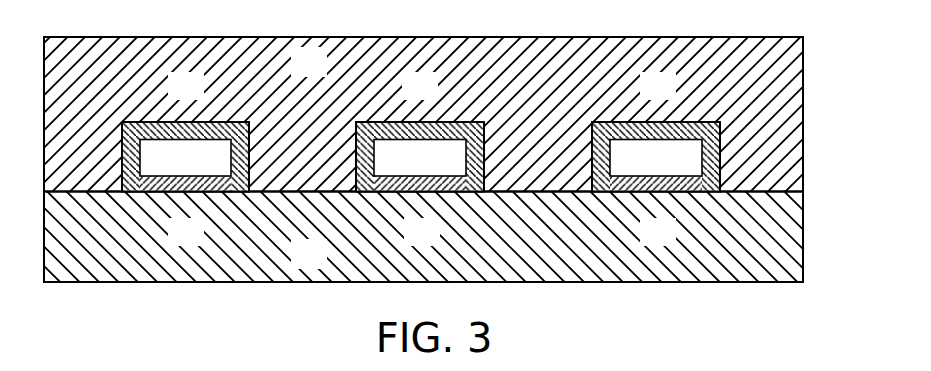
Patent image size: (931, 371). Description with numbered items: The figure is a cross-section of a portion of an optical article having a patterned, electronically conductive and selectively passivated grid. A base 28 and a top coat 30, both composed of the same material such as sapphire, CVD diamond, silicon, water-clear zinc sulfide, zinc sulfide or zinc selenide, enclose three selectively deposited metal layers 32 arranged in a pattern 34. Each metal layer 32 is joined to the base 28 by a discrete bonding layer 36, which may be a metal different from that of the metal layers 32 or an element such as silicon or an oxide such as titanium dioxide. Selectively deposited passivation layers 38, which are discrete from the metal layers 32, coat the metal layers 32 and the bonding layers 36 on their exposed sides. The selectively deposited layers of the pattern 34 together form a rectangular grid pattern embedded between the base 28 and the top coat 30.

The base 28 is at (294, 266).
The top coat 30 is at (294, 74).
The metal layers 32 is at (171, 169).
The pattern 34 is at (812, 124).
The bonding layers 36 is at (186, 192).
The passivation layers 38 is at (186, 121).